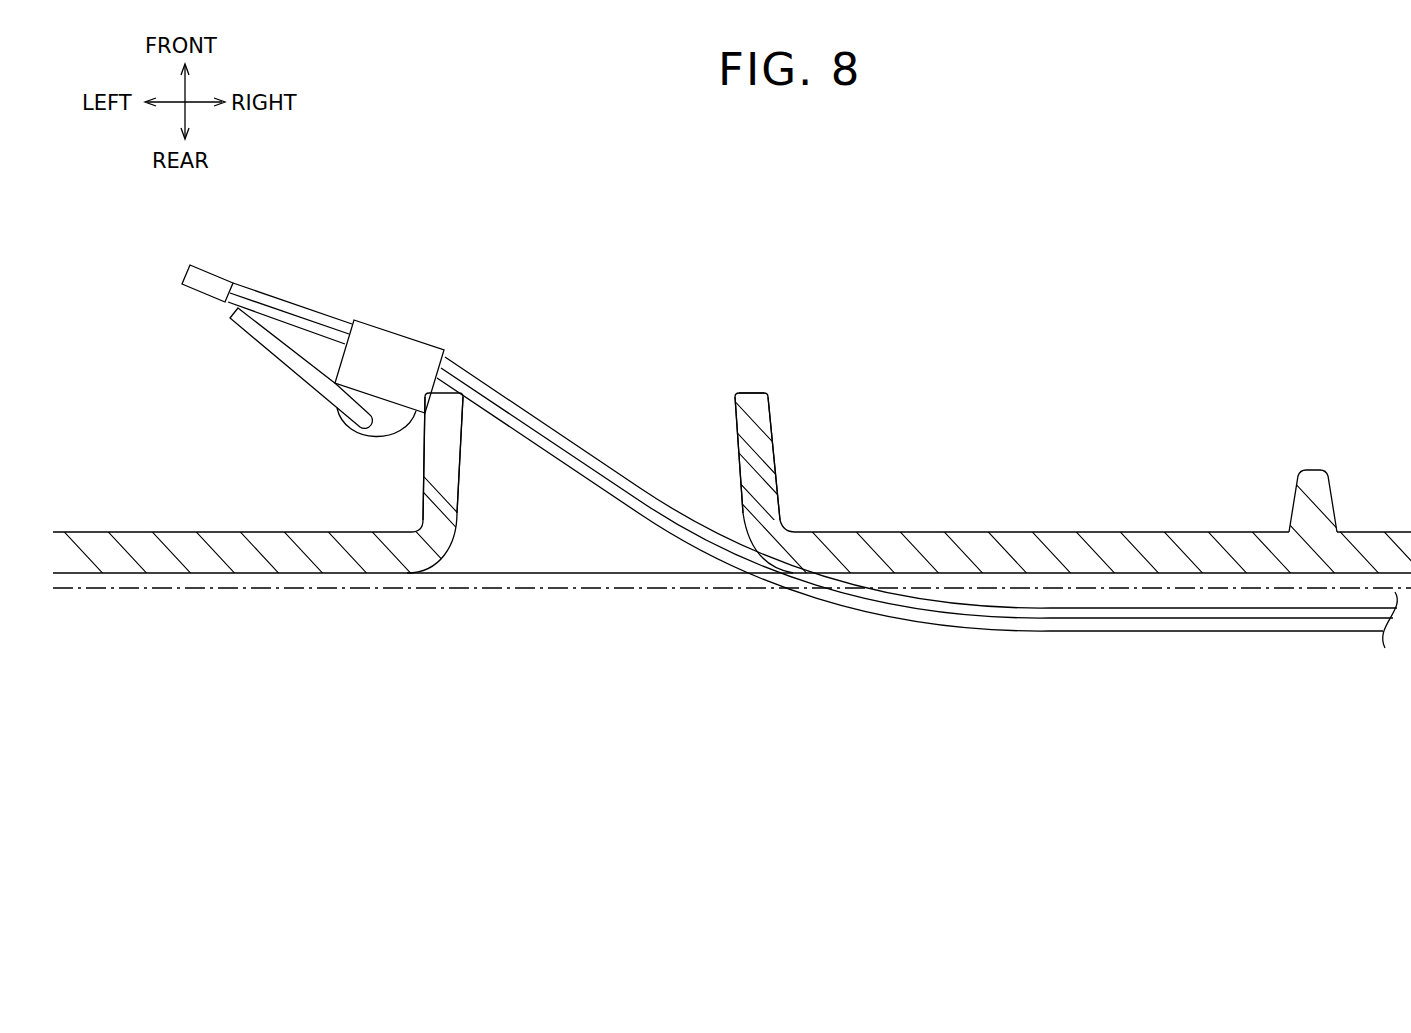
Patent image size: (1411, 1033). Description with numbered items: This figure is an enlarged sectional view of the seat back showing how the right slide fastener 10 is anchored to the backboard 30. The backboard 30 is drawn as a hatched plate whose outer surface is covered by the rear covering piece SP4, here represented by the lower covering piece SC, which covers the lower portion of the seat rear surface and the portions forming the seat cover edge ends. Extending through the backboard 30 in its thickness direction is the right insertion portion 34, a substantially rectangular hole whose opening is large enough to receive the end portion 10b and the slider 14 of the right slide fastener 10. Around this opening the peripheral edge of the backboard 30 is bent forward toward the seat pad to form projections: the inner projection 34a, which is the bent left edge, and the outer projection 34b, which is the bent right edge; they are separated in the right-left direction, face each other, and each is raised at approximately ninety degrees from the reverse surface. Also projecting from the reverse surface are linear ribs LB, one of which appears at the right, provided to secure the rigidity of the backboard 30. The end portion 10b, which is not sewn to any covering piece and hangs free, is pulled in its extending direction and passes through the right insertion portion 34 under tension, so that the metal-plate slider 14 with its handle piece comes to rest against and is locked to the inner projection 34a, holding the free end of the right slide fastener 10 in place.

The right slide fastener 10 is at (917, 550).
The end portion 10b is at (933, 636).
The slider 14 is at (392, 357).
The backboard 30 is at (256, 578).
The right insertion portion 34 is at (735, 468).
The inner projection 34a is at (433, 482).
The outer projection 34b is at (757, 420).
The linear ribs LB is at (1290, 503).
The lower covering piece SC is at (732, 645).
The rear covering piece SP4 is at (560, 592).